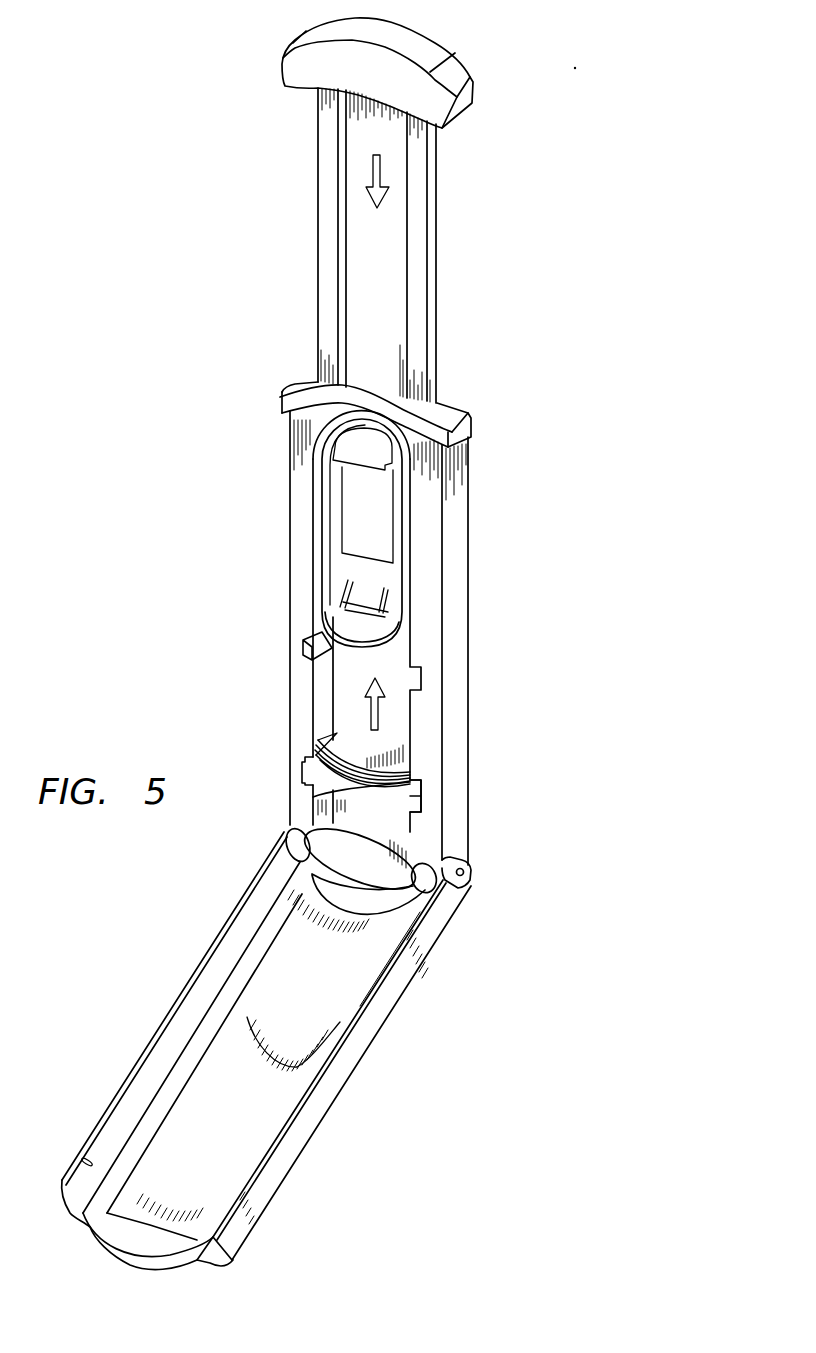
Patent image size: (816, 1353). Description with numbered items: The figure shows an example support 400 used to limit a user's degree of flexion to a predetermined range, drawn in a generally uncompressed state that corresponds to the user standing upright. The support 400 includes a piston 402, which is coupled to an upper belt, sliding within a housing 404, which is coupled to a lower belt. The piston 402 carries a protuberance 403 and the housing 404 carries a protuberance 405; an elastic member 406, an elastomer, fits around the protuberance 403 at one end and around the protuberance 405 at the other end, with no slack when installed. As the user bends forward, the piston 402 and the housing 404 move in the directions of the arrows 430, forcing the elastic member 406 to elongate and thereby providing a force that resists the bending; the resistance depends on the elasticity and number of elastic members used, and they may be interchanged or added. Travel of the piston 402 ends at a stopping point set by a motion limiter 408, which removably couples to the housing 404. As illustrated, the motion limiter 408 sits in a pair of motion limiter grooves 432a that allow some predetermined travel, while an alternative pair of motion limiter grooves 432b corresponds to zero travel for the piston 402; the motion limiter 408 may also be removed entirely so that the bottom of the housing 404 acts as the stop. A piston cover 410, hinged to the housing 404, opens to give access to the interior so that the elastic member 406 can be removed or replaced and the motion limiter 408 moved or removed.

The support 400 is at (243, 322).
The piston 402 is at (433, 247).
The protuberance 403 is at (374, 638).
The housing 404 is at (457, 583).
The protuberance 405 is at (343, 443).
The elastic member 406 is at (398, 527).
The motion limiter 408 is at (424, 797).
The piston cover 410 is at (382, 1012).
The arrows 430 is at (370, 172).
The motion limiter grooves 432a is at (301, 772).
The motion limiter grooves 432b is at (303, 651).